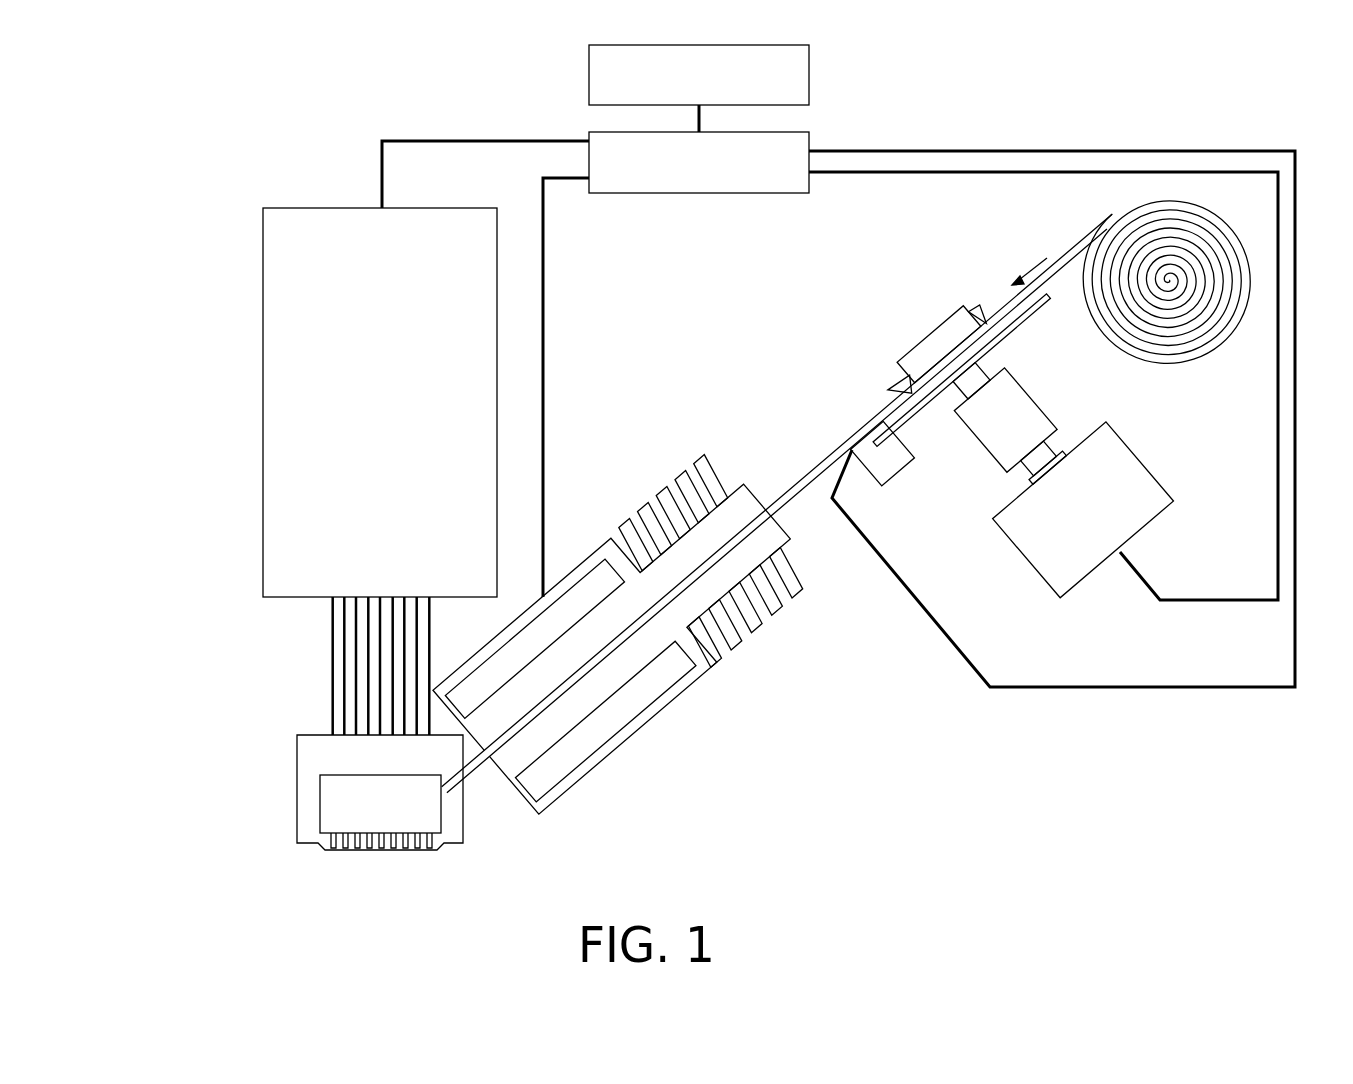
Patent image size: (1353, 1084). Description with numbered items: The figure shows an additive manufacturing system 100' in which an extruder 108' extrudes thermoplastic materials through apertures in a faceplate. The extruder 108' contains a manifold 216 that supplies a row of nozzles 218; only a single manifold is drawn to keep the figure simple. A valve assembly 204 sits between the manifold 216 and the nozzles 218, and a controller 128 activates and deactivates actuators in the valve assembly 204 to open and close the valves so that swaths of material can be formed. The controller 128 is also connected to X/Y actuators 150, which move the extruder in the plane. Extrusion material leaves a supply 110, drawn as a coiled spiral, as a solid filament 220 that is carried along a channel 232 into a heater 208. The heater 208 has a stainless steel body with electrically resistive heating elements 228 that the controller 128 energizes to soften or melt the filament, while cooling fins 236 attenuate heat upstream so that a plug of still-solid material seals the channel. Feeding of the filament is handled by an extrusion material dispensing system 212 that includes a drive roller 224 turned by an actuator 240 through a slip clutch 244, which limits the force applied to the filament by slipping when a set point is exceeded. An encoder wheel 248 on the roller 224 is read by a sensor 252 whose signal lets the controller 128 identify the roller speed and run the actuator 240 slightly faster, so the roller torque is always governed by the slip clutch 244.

The additive manufacturing system 100' is at (155, 115).
The extruder 108' is at (393, 777).
The extrusion material supply 110 is at (1238, 233).
The controller 128 is at (699, 193).
The X/Y actuators 150 is at (810, 75).
The valve assembly 204 is at (328, 207).
The heater 208 is at (618, 750).
The extrusion material dispensing system 212 is at (994, 594).
The manifold 216 is at (445, 818).
The nozzle 218 is at (342, 853).
The extrusion material filament 220 is at (1065, 250).
The drive roller 224 is at (933, 333).
The heating element 228 is at (582, 577).
The channel 232 is at (525, 728).
The cooling fins 236 is at (700, 455).
The actuator 240 is at (1140, 458).
The slip clutch 244 is at (1047, 412).
The encoder wheel 248 is at (928, 418).
The sensor 252 is at (885, 500).